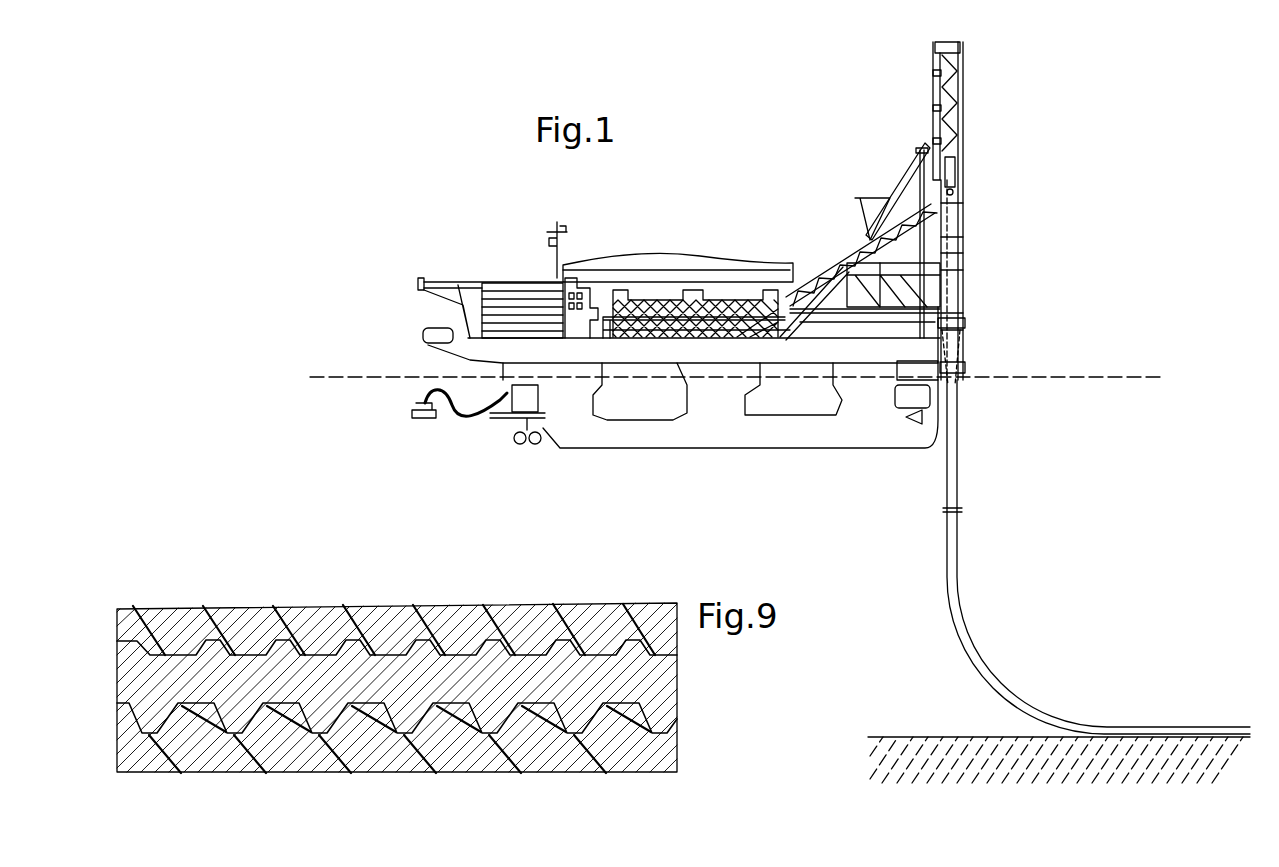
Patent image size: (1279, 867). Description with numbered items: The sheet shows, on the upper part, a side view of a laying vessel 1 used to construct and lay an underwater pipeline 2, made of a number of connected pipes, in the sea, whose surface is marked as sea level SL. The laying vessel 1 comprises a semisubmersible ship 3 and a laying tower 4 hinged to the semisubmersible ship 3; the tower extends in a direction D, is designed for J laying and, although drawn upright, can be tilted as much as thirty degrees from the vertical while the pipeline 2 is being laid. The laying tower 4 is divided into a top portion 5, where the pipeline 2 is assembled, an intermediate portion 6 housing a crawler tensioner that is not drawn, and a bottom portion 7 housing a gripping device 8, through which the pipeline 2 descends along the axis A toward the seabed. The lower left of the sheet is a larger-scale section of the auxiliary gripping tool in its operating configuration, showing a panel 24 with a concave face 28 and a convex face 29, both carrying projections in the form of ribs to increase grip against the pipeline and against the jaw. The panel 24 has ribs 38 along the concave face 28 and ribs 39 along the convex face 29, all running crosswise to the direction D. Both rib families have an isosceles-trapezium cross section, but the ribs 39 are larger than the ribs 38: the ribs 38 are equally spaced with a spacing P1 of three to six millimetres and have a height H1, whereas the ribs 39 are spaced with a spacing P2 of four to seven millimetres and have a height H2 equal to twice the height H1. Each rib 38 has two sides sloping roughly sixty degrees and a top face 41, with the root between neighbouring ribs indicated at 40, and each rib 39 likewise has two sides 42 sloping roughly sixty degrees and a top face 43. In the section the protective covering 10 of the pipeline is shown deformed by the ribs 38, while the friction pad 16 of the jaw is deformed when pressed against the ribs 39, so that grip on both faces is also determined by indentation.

In FIG. 1, the laying vessel 1 is at (293, 228).
In FIG. 1, the underwater pipeline 2 is at (985, 645).
In FIG. 1, the semisubmersible ship 3 is at (437, 364).
In FIG. 1, the laying tower 4 is at (878, 130).
In FIG. 1, the top portion 5 is at (975, 110).
In FIG. 1, the intermediate portion 6 is at (973, 245).
In FIG. 1, the bottom portion 7 is at (967, 340).
In FIG. 1, the gripping device 8 is at (977, 363).
In FIG. 1, the pipe string axis A is at (965, 265).
In FIG. 1, the direction D is at (1005, 270).
In FIG. 9, the direction D is at (237, 583).
In FIG. 1, the sea level SL is at (1110, 376).
In FIG. 9, the protective covering 10 is at (352, 606).
In FIG. 9, the friction pad 16 is at (420, 768).
In FIG. 9, the panel 24 is at (668, 672).
In FIG. 9, the concave face 28 is at (640, 640).
In FIG. 9, the convex face 29 is at (290, 760).
In FIG. 9, the ribs 38 is at (140, 650).
In FIG. 9, the ribs 39 is at (148, 733).
In FIG. 9, the upper tooth root 40 is at (143, 646).
In FIG. 9, the top face 41 is at (128, 650).
In FIG. 9, the sides 42 is at (133, 716).
In FIG. 9, the top face 43 is at (165, 740).
In FIG. 9, the height H1 is at (160, 655).
In FIG. 9, the height H2 is at (645, 703).
In FIG. 9, the spacing P1 is at (353, 640).
In FIG. 9, the spacing P2 is at (497, 760).